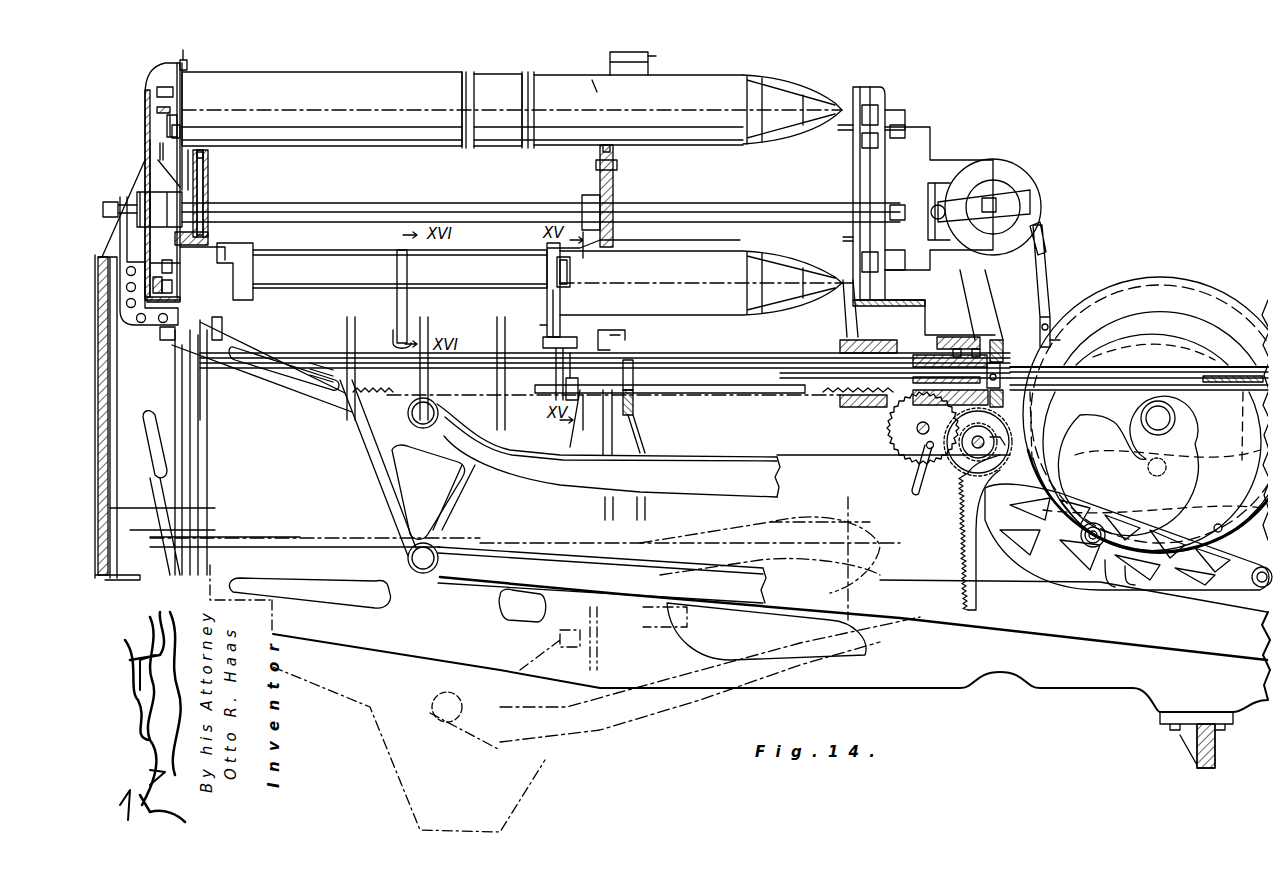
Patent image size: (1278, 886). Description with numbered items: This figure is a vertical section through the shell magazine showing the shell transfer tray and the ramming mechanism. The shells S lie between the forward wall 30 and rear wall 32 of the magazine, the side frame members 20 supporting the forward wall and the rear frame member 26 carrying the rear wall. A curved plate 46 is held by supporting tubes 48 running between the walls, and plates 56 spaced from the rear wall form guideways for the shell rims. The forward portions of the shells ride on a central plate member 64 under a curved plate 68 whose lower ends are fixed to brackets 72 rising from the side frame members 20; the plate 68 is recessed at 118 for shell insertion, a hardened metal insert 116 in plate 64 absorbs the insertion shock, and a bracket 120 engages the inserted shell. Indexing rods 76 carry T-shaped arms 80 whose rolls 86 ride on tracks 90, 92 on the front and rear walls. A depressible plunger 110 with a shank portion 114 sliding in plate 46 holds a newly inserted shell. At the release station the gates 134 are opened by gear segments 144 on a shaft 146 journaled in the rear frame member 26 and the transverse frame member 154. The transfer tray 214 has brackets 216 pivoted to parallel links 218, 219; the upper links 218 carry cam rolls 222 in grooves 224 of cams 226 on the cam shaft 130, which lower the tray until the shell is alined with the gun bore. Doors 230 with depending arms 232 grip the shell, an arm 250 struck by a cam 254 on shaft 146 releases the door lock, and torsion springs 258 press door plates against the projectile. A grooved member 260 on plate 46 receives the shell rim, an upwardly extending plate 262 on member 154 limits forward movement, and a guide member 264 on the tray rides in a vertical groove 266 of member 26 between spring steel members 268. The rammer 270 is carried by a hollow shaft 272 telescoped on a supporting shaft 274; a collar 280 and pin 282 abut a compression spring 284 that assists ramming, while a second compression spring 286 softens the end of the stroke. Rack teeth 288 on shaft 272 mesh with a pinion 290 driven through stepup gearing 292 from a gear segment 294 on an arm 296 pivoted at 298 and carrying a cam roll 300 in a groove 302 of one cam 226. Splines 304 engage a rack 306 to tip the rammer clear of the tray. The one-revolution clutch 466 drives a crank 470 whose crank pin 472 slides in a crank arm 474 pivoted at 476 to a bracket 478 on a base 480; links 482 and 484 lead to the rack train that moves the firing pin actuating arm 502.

The shell S is at (440, 78).
The side frame members 20 is at (905, 685).
The rear frame member 26 is at (96, 262).
The forward wall 30 is at (879, 87).
The rear wall 32 is at (148, 84).
The curved plate 46 is at (209, 192).
The supporting tubes 48 is at (400, 204).
The plates 56 is at (187, 60).
The central plate member 64 is at (614, 183).
The curved plate 68 is at (609, 62).
The brackets 72 is at (634, 441).
The rod 76 is at (181, 133).
The T-shaped arms 80 is at (178, 112).
The rolls 86 is at (166, 99).
The track 90 is at (867, 151).
The track 92 is at (165, 149).
The depressible plunger 110 is at (204, 156).
The shank portion 114 is at (204, 174).
The hardened metal insert 116 is at (598, 155).
The recess 118 is at (593, 80).
The forwardly extending bracket 120 is at (650, 60).
The cam shaft 130 is at (1176, 416).
The gates 134 is at (626, 333).
The gear segments 144 is at (635, 403).
The shaft 146 is at (702, 395).
The transverse frame member 154 is at (840, 346).
The transfer tray 214 is at (283, 335).
The brackets 216 is at (390, 478).
The parallel links 218 is at (553, 477).
The lower arm 219 is at (500, 555).
The cam rolls 222 is at (1167, 465).
The grooves 224 is at (1203, 294).
The cams 226 is at (1167, 287).
The doors 230 is at (333, 276).
The downwardly extending arm 232 is at (396, 308).
The downwardly extending arm 250 is at (579, 322).
The cam 254 is at (504, 398).
The torsion springs 258 is at (573, 272).
The member 260 is at (210, 242).
The upwardly extending plate 262 is at (844, 308).
The guide member 264 is at (191, 328).
The vertical groove 266 is at (179, 501).
The spring steel members 268 is at (305, 530).
The rammer 270 is at (208, 478).
The hollow shaft 272 is at (375, 382).
The second hollow shaft 274 is at (1110, 370).
The collar 280 is at (1000, 343).
The pin 282 is at (1003, 368).
The compression spring 284 is at (944, 338).
The second compression spring 286 is at (1227, 378).
The rack teeth 288 is at (832, 397).
The pinion 290 is at (887, 432).
The stepup gearing 292 is at (970, 470).
The gear segment 294 is at (963, 558).
The arm 296 is at (1117, 565).
The pivot 298 is at (1262, 588).
The cam roll 300 is at (1096, 528).
The groove 302 is at (1216, 526).
The splines 304 is at (718, 362).
The rack 306 is at (972, 338).
The one-revolution clutch mechanism 466 is at (970, 158).
The crank 470 is at (1046, 208).
The crank pin 472 is at (995, 190).
The crank arm 474 is at (1020, 190).
The pivot 476 is at (935, 207).
The bracket 478 is at (925, 205).
The base 480 is at (905, 125).
The link 482 is at (1046, 288).
The link 484 is at (1057, 342).
The firing pin actuating arm 502 is at (908, 472).